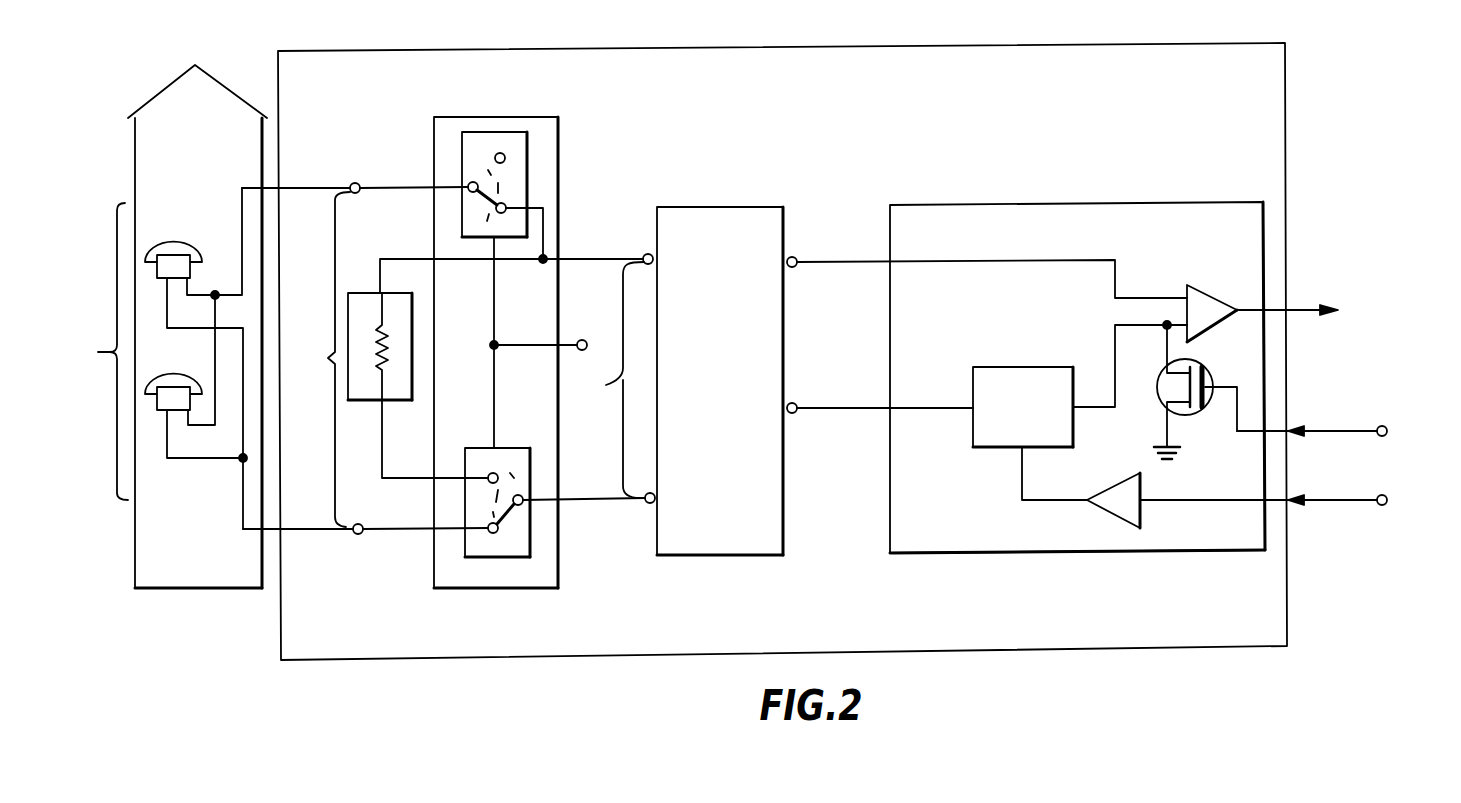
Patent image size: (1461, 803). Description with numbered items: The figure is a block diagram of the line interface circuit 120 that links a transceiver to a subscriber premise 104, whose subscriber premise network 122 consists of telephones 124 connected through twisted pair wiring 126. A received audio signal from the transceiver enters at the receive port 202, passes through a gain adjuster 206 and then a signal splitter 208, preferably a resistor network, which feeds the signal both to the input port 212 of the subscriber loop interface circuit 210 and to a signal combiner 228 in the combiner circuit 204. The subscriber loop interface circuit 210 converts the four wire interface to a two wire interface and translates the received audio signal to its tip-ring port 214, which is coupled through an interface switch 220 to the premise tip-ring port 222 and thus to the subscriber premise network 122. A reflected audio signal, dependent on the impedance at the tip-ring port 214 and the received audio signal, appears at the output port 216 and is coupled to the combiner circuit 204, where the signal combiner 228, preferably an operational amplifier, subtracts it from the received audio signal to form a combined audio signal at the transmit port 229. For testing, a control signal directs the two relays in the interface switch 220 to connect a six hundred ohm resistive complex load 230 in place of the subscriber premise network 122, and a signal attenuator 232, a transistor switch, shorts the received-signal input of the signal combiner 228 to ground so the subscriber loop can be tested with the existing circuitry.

The subscriber premise 104 is at (232, 92).
The subscriber premise network 122 is at (95, 351).
The telephones 124 is at (170, 243).
The twisted pair wiring 126 is at (207, 460).
The line interface circuit 120 is at (975, 653).
The premise tip-ring port 222 is at (365, 360).
The interface switch 220 is at (559, 131).
The complex load 230 is at (362, 292).
The tip-ring port 214 is at (599, 353).
The subscriber loop interface circuit 210 is at (720, 206).
The output port 216 is at (795, 268).
The input port 212 is at (795, 403).
The combiner circuit 204 is at (1004, 553).
The signal splitter 208 is at (1024, 367).
The signal combiner 228 is at (1192, 284).
The transmit port 229 is at (1290, 309).
The signal attenuator 232 is at (1204, 410).
The gain adjuster 206 is at (1128, 473).
The receive port 202 is at (1288, 503).